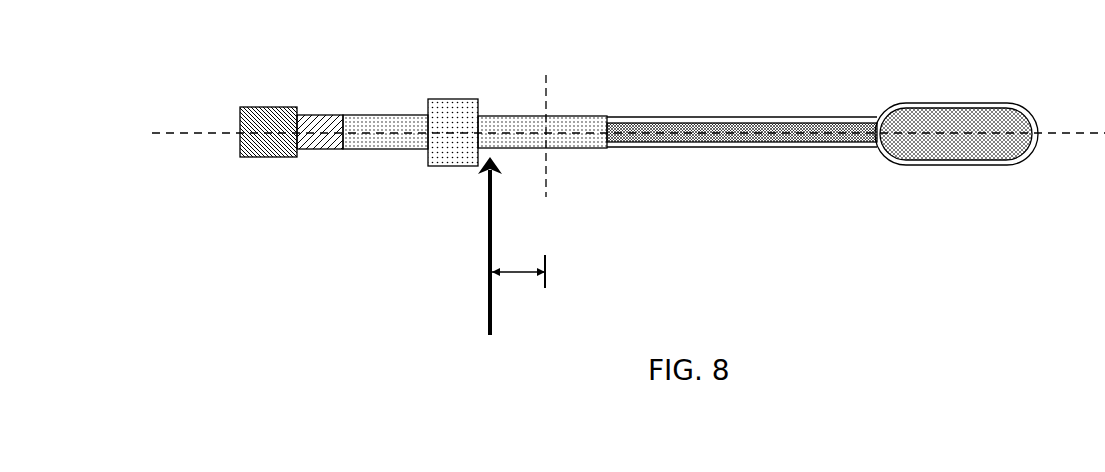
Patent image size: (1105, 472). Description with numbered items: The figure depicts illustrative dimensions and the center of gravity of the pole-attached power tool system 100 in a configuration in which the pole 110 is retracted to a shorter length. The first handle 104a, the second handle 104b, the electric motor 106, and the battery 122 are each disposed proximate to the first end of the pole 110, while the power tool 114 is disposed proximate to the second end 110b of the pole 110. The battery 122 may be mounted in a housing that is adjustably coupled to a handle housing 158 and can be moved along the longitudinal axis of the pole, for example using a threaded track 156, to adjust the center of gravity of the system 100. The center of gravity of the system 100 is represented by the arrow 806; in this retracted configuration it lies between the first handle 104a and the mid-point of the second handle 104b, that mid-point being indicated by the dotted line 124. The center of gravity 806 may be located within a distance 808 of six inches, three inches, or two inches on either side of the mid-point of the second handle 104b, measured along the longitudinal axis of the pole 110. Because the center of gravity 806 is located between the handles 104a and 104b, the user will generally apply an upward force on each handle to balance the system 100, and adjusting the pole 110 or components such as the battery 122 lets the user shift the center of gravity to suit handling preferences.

The pole-attached power tool system 100 is at (235, 45).
The battery 122 is at (253, 157).
The threaded track 156 is at (322, 148).
The first handle 104a is at (353, 115).
The electric motor 106 is at (447, 99).
The second handle 104b is at (572, 116).
The handle housing 158 is at (498, 116).
The pole 110 is at (787, 147).
The second end of the pole 110b is at (861, 103).
The power tool 114 is at (913, 165).
The dotted line 124 is at (546, 197).
The center of gravity arrow 806 is at (488, 303).
The distance 808 is at (513, 275).